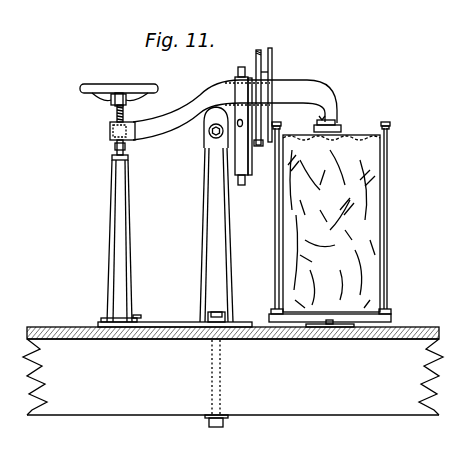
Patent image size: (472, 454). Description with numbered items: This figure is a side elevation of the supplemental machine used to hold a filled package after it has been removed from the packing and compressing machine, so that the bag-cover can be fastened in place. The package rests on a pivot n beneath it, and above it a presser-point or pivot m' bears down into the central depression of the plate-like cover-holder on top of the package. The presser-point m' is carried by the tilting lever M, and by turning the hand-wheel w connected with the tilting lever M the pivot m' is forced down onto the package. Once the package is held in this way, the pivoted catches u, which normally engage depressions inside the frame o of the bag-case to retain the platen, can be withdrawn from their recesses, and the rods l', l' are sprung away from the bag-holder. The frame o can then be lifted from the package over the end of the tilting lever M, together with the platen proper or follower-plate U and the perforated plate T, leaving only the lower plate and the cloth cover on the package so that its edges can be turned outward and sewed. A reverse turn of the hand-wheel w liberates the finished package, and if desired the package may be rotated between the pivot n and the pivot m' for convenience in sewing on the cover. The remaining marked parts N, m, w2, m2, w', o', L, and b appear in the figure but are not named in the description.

The pivot n is at (233, 371).
The standard N is at (175, 267).
The pivot pin m is at (203, 130).
The tilting lever M is at (235, 110).
The support column and lower screw w2 is at (126, 155).
The block m2 is at (110, 128).
The threaded rod w' is at (133, 112).
The hand-wheel w is at (119, 89).
The slide bar stubs o' is at (244, 121).
The frame of the bag-case o is at (240, 123).
The pivoted catches u is at (259, 95).
The perforated plate T is at (273, 52).
The follower-plate U is at (263, 71).
The presser-point m' is at (339, 121).
The container L is at (331, 223).
The rod b is at (332, 224).
The rods l' is at (270, 218).